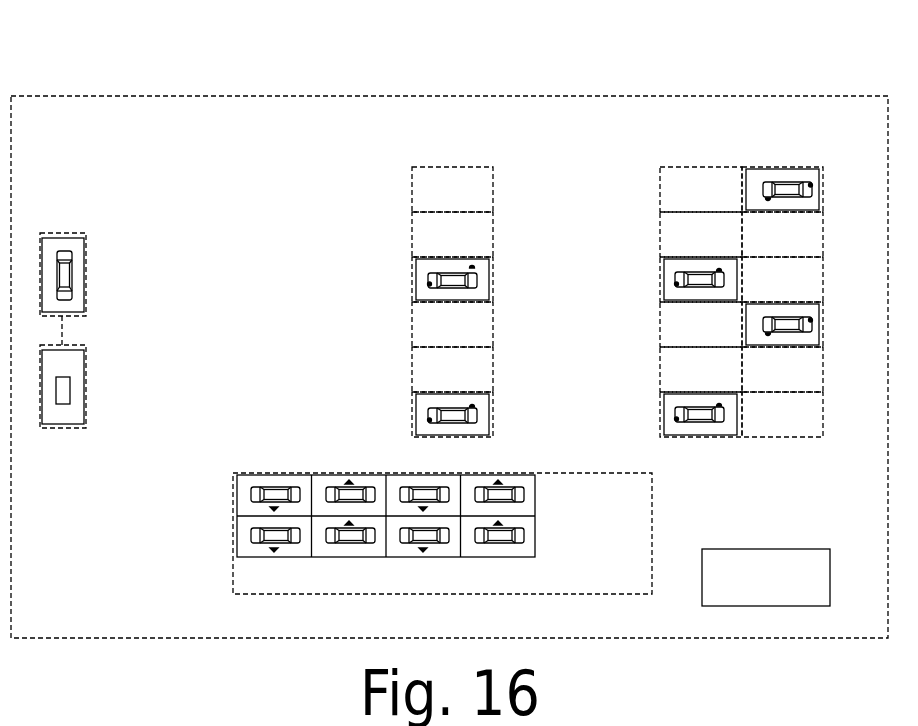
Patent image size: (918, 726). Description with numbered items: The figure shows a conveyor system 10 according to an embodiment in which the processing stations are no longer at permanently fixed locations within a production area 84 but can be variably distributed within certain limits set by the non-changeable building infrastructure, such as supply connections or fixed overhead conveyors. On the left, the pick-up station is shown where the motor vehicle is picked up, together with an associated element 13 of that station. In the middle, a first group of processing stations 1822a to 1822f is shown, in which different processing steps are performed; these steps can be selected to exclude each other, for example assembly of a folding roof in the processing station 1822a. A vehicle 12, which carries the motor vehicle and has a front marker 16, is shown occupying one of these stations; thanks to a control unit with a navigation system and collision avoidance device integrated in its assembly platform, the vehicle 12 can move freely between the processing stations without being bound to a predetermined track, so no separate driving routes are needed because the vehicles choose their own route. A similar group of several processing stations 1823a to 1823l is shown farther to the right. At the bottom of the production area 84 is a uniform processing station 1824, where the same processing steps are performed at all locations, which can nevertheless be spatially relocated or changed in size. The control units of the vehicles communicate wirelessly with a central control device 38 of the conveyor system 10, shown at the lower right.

The production area 84 is at (113, 96).
The conveyor system 10 is at (246, 228).
The bay element 13 is at (68, 392).
The vehicle 12 is at (483, 285).
The vehicle front marker 16 is at (426, 283).
The processing station 1822a is at (412, 184).
The processing station 1822f is at (412, 413).
The processing station 1823a is at (660, 192).
The processing station 1823l is at (661, 411).
The processing station 1824 is at (265, 473).
The central control device 38 is at (776, 549).